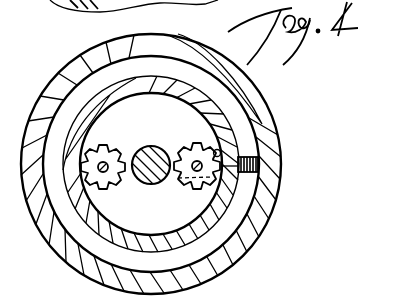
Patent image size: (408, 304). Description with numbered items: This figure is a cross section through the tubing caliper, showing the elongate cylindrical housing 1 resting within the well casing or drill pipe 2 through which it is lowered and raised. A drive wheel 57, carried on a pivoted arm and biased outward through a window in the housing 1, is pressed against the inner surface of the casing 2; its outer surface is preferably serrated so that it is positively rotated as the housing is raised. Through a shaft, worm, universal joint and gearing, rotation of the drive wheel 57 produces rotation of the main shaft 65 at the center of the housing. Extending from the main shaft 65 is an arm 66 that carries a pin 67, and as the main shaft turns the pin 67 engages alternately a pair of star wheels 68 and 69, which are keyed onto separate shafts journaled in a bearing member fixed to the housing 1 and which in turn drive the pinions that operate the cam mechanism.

The housing 1 is at (231, 205).
The well casing 2 is at (247, 232).
The drive wheel 57 is at (259, 165).
The main shaft 65 is at (149, 148).
The arm 66 is at (172, 183).
The pin 67 is at (221, 153).
The star wheel 68 is at (193, 146).
The star wheel 69 is at (109, 146).